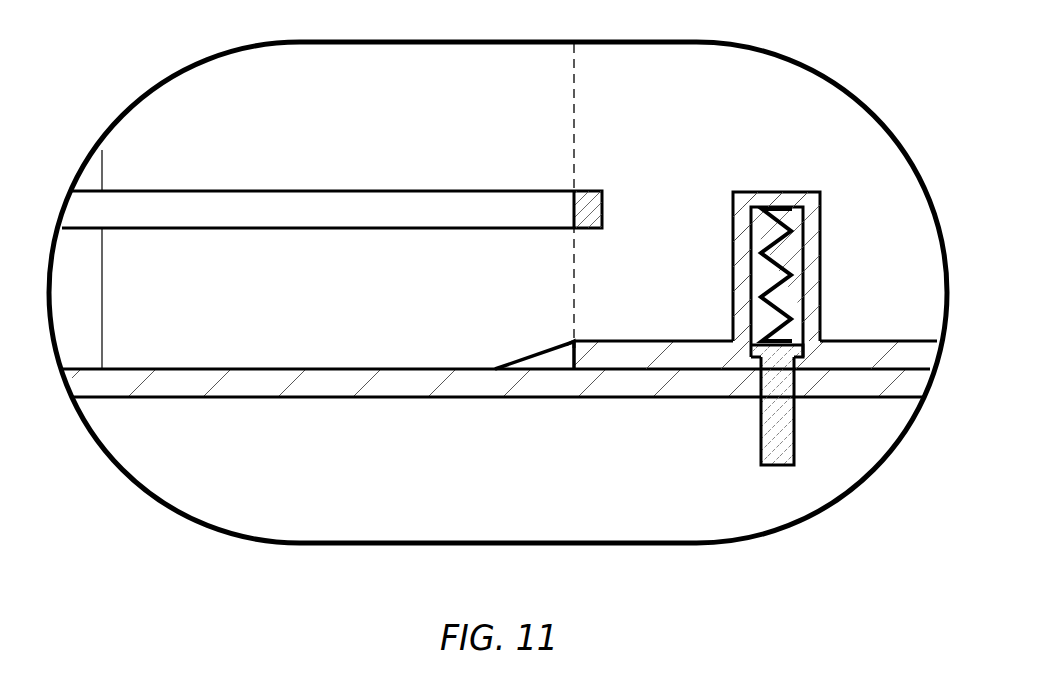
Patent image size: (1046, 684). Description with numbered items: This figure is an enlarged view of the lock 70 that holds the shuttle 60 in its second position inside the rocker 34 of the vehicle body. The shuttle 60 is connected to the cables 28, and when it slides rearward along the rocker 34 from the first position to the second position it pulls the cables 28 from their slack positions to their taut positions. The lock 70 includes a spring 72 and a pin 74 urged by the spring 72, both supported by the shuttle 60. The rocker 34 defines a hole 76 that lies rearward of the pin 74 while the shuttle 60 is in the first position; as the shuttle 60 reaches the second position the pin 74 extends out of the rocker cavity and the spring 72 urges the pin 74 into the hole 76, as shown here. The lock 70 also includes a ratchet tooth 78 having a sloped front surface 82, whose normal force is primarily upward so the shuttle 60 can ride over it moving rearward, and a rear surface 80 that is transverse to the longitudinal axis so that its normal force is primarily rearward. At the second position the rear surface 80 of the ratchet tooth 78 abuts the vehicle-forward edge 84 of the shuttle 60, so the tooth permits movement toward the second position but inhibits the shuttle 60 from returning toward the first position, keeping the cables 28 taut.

The cables 28 is at (313, 190).
The rocker 34 is at (261, 398).
The shuttle 60 is at (884, 340).
The lock 70 is at (718, 156).
The spring 72 is at (782, 250).
The pin 74 is at (776, 435).
The hole 76 is at (785, 385).
The ratchet tooth 78 is at (543, 362).
The rear surface 80 is at (521, 355).
The front surface 82 is at (576, 360).
The vehicle-forward edge 84 is at (571, 351).